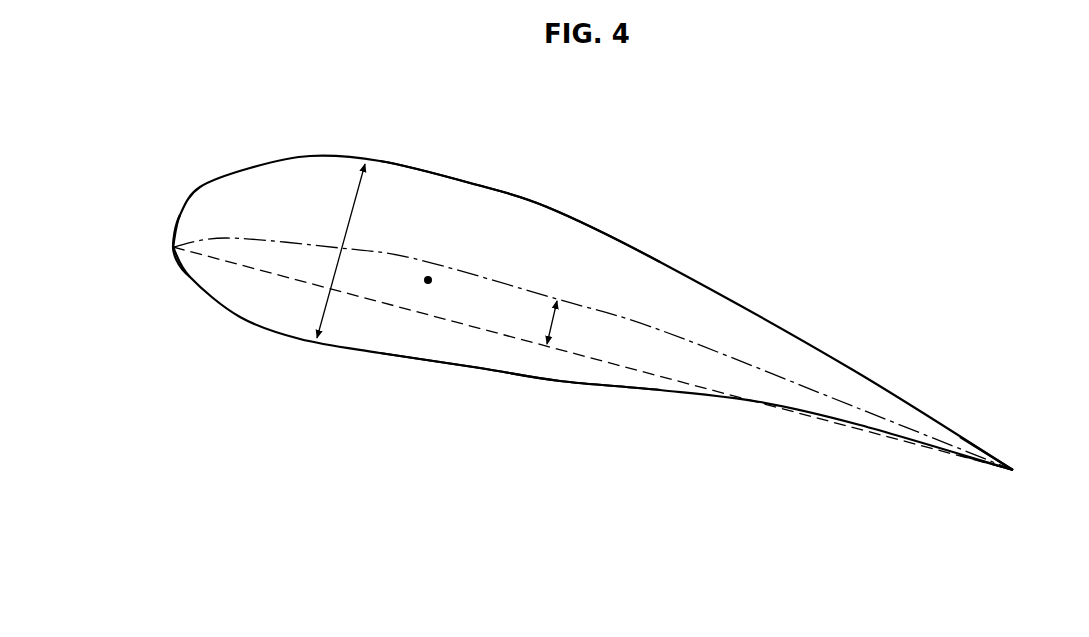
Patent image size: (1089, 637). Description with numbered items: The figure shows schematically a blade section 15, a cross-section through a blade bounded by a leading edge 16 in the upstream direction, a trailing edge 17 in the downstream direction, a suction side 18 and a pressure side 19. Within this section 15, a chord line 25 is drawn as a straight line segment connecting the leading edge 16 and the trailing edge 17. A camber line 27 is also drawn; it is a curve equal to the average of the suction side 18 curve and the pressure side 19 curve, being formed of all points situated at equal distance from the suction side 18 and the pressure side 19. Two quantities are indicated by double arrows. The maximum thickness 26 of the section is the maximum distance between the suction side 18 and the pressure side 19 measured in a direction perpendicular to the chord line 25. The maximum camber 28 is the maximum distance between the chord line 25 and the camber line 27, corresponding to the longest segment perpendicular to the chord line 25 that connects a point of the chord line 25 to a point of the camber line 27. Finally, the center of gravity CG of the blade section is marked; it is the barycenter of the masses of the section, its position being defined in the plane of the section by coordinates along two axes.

The blade section 15 is at (676, 198).
The leading edge 16 is at (166, 249).
The trailing edge 17 is at (1021, 475).
The suction side 18 is at (553, 202).
The pressure side 19 is at (503, 382).
The chord line 25 is at (483, 330).
The maximum thickness 26 is at (343, 263).
The camber line 27 is at (412, 258).
The maximum camber 28 is at (555, 323).
The center of gravity CG is at (445, 293).